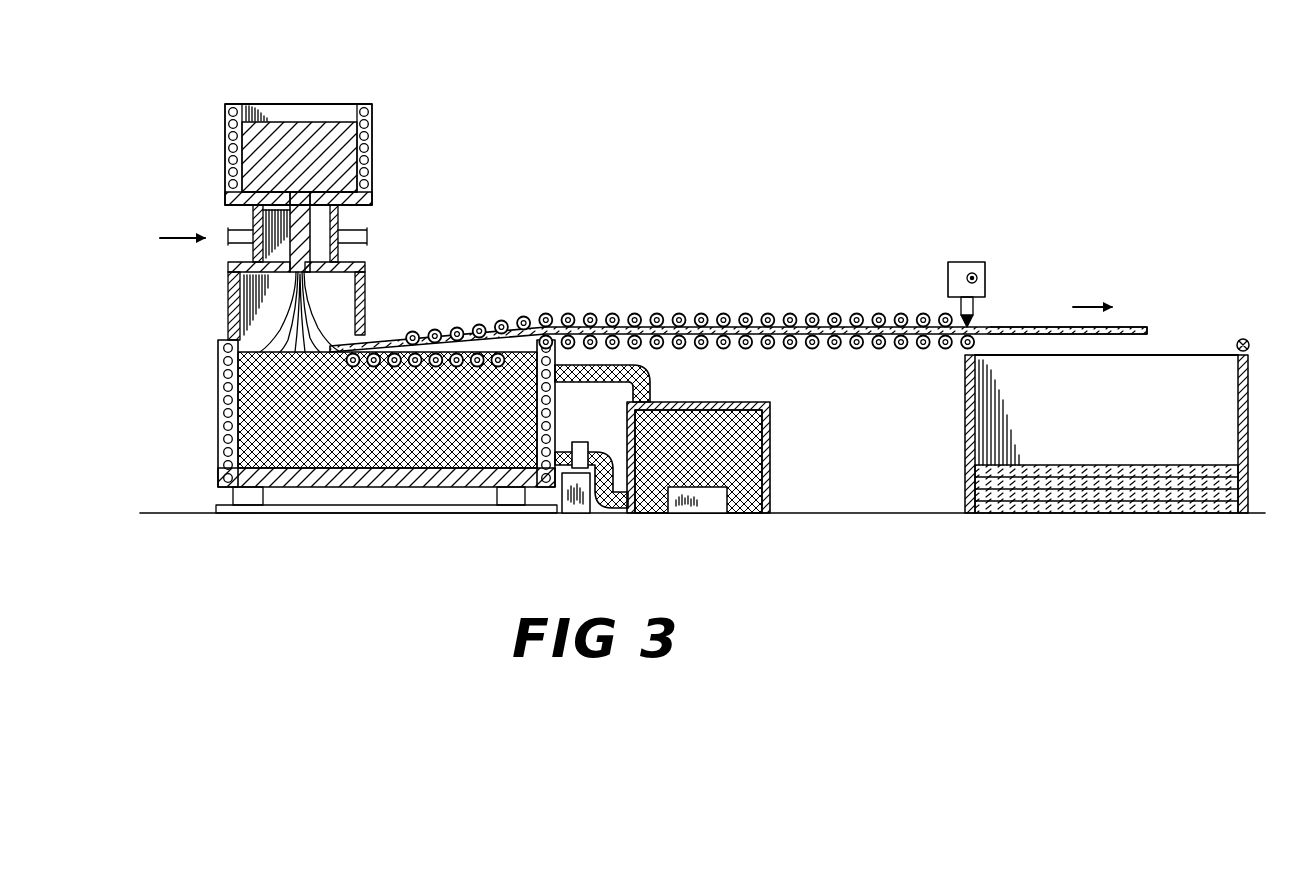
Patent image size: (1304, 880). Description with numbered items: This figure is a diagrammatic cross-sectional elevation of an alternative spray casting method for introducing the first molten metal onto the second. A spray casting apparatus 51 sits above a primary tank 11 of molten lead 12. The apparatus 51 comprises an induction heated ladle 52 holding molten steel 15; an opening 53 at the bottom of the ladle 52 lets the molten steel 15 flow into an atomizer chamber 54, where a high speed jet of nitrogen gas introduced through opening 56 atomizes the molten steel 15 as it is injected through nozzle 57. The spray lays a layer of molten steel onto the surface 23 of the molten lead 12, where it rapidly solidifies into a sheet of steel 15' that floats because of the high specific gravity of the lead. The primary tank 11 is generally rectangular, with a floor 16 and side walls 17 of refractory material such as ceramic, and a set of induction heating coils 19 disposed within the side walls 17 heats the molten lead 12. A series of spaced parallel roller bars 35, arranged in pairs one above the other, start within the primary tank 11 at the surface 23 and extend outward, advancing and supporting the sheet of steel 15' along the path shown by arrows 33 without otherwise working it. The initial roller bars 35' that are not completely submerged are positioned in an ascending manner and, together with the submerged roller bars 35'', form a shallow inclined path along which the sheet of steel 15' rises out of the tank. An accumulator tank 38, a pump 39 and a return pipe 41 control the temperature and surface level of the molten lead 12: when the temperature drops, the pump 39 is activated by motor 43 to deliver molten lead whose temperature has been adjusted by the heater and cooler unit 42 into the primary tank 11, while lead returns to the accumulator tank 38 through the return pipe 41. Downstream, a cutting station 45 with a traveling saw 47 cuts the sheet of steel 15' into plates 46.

The spray casting apparatus 51 is at (289, 100).
The molten steel 15 is at (247, 157).
The induction heated ladle 52 is at (372, 160).
The opening 53 is at (332, 212).
The atomizer chamber 54 is at (313, 250).
The opening 56 is at (243, 240).
The nozzle 57 is at (284, 280).
The surface of the molten lead 23 is at (262, 384).
The induction heating coils 19 is at (218, 436).
The side walls 17 is at (222, 474).
The floor 16 is at (287, 487).
The molten lead 12 is at (365, 455).
The primary tank 11 is at (420, 497).
The motor 43 is at (580, 512).
The heater and cooler unit 42 is at (700, 512).
The pump 39 is at (598, 414).
The return pipe 41 is at (645, 378).
The accumulator tank 38 is at (770, 446).
The roller bars 35 is at (756, 306).
The initial roller bars 35' is at (479, 312).
The submerged roller bars 35'' is at (426, 322).
The sheet of steel 15' is at (738, 321).
The traveling saw 47 is at (950, 272).
The cutting station 45 is at (1018, 315).
The arrows 33 is at (1093, 307).
The plates 46 is at (1149, 452).